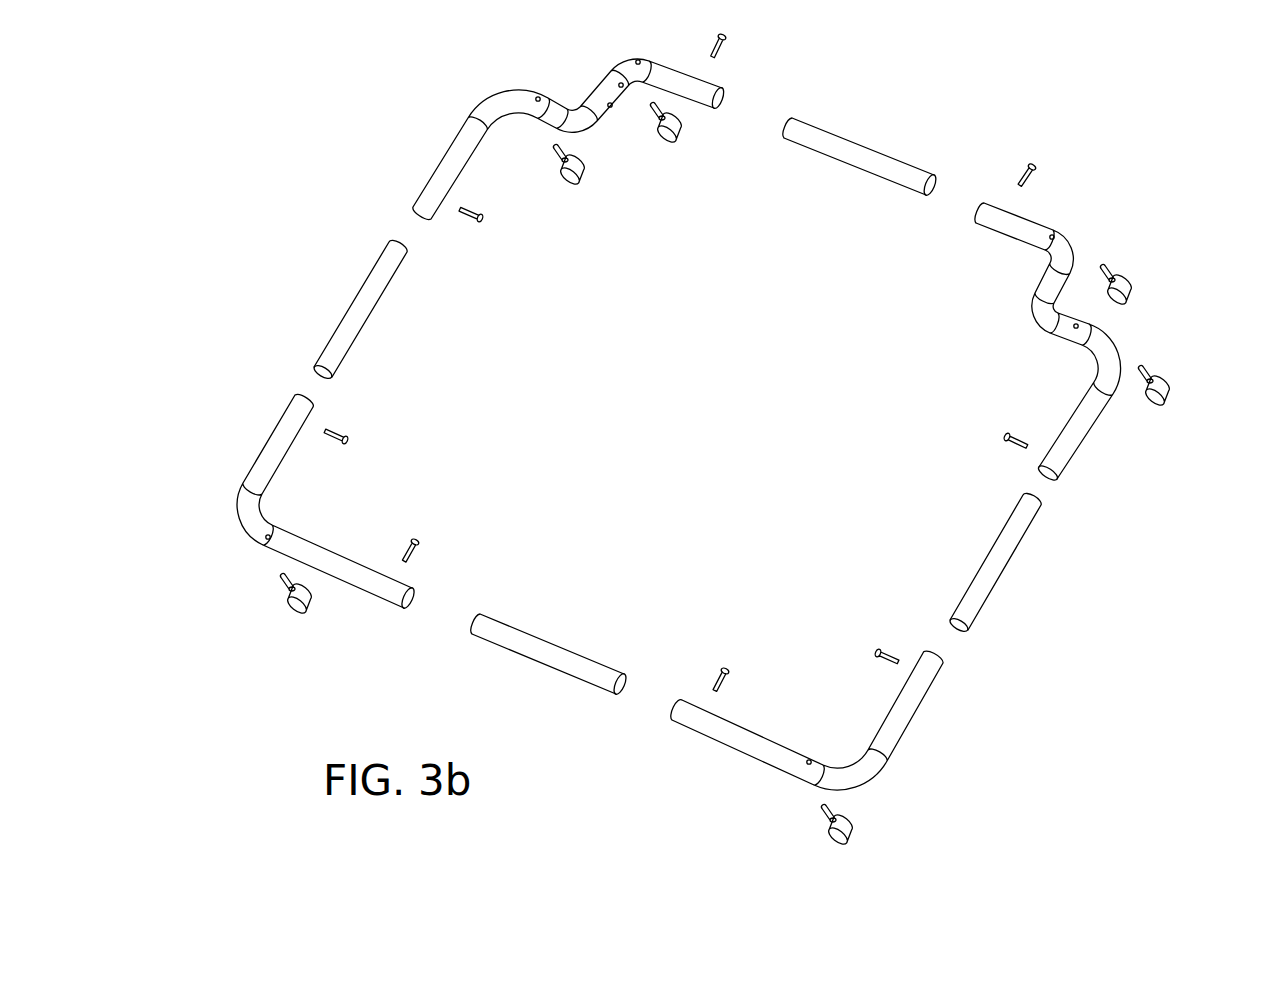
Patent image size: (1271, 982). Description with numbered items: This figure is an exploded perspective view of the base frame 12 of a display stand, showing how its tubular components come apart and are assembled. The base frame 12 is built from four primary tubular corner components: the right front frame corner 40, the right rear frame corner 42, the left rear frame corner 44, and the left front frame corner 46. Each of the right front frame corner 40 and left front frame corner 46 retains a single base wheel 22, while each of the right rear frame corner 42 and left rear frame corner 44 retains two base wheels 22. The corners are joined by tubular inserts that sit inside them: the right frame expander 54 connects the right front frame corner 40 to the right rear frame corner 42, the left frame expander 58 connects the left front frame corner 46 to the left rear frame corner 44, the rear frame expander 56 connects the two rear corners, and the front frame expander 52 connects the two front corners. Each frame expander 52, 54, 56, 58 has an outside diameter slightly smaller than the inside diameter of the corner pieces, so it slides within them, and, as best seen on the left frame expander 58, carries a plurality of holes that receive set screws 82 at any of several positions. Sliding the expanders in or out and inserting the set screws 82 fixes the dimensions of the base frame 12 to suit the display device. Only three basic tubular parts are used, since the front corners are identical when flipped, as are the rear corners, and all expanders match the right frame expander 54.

The base frame 12 is at (370, 225).
The base wheel 22 is at (580, 187).
The right front frame corner 40 is at (732, 755).
The right rear frame corner 42 is at (1032, 288).
The left rear frame corner 44 is at (433, 182).
The left front frame corner 46 is at (250, 508).
The front frame expander 52 is at (560, 638).
The right frame expander 54 is at (1005, 550).
The rear frame expander 56 is at (902, 172).
The left frame expander 58 is at (337, 348).
The set screw 82 is at (733, 49).